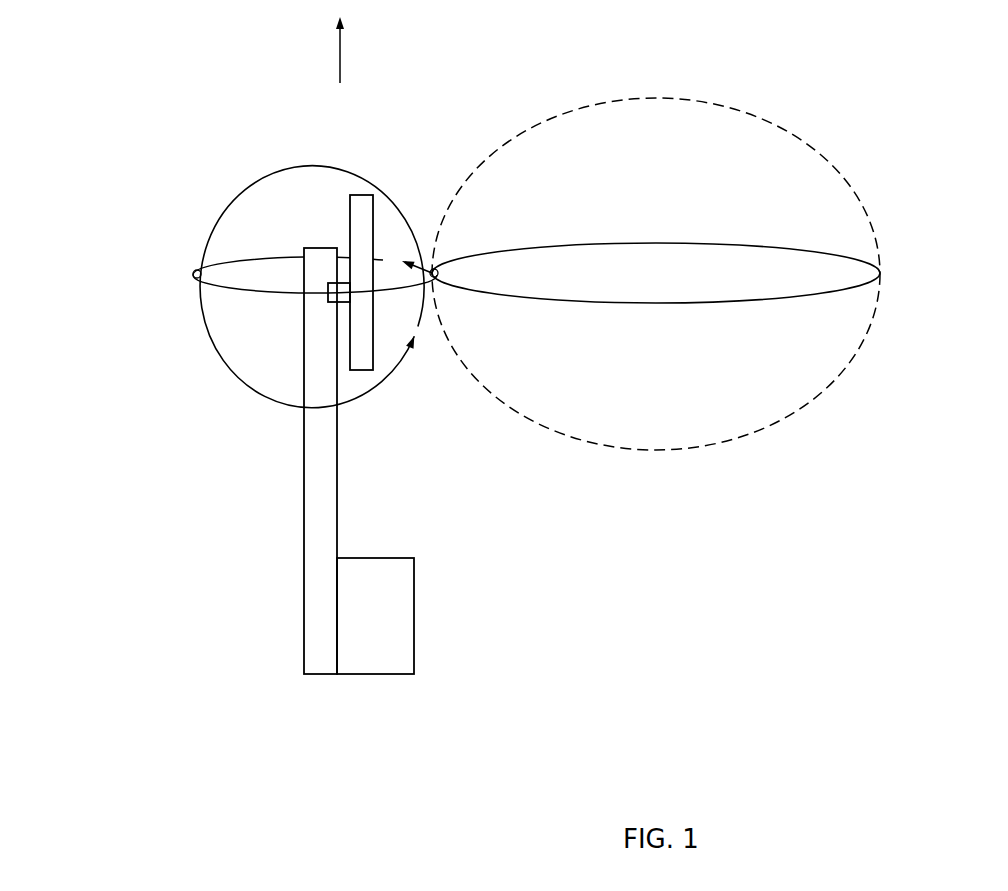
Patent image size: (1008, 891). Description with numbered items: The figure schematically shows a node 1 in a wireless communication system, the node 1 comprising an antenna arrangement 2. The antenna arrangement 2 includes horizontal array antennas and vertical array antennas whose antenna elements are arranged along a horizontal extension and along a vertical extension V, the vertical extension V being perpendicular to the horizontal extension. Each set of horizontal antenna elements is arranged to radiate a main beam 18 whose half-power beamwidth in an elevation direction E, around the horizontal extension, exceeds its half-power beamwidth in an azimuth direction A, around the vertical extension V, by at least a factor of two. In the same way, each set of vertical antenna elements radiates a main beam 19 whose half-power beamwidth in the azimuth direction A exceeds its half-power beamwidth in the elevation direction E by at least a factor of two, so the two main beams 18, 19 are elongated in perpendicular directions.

The node 1 is at (145, 167).
The antenna arrangement 2 is at (362, 227).
The azimuth direction A is at (272, 292).
The elevation direction E is at (255, 393).
The vertical extension V is at (356, 50).
The main beam 18 is at (586, 437).
The main beam 19 is at (648, 305).